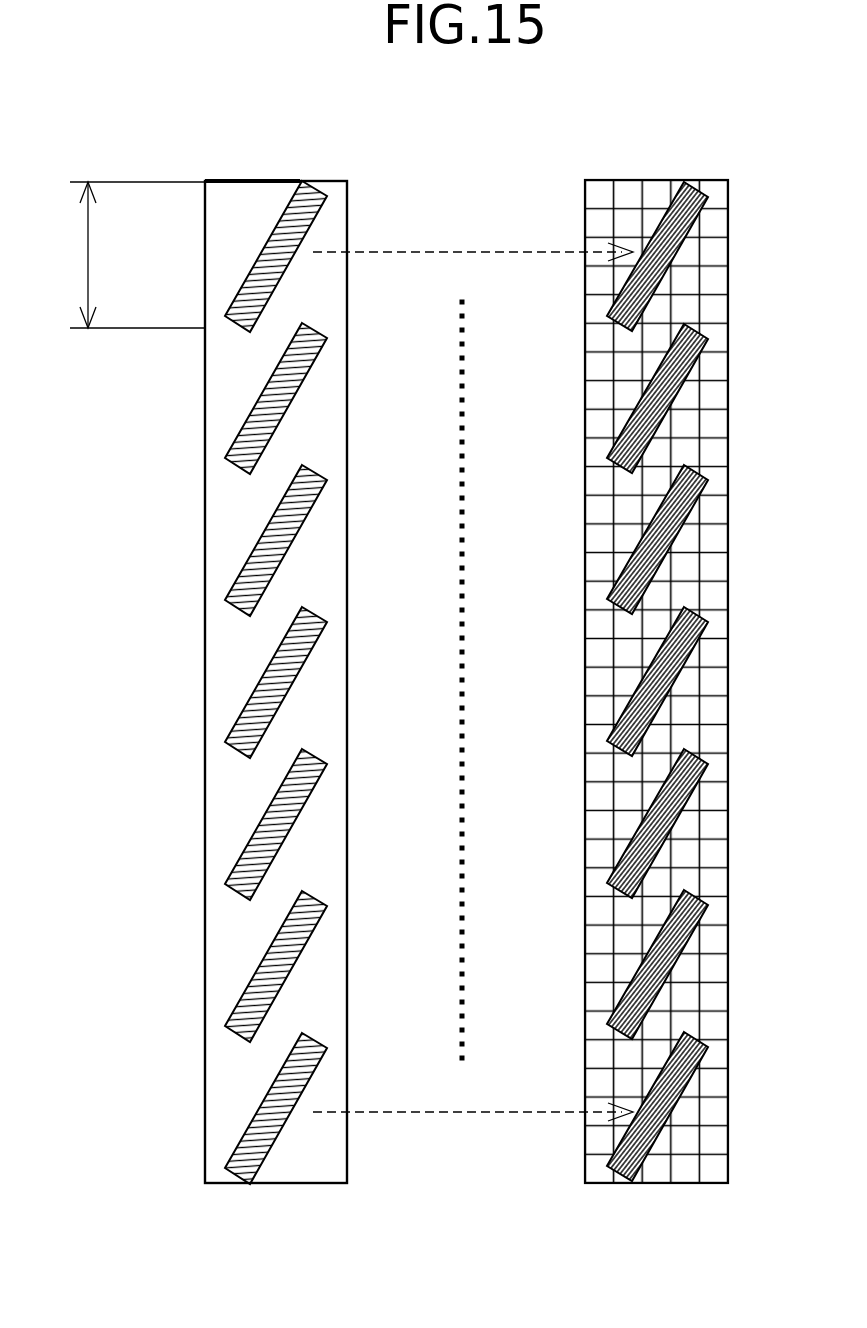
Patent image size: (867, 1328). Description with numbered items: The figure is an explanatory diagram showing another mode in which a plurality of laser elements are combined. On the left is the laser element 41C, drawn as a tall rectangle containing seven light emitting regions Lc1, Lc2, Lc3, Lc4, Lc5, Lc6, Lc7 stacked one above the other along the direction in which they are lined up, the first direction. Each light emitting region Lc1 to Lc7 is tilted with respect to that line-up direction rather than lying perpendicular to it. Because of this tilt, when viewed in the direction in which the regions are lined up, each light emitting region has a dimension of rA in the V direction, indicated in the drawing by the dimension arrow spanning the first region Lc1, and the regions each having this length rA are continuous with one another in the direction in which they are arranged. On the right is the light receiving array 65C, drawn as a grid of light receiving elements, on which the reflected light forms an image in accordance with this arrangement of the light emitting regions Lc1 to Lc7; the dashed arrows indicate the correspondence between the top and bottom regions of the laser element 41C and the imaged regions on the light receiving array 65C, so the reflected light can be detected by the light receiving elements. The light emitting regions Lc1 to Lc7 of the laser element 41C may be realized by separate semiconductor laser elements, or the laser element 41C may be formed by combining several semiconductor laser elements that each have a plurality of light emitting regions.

The laser element 41C is at (287, 133).
The light receiving array 65C is at (712, 180).
The light emitting region Lc1 is at (250, 267).
The light emitting region Lc2 is at (250, 413).
The light emitting region Lc3 is at (250, 556).
The light emitting region Lc4 is at (250, 699).
The light emitting region Lc5 is at (250, 842).
The light emitting region Lc6 is at (250, 986).
The light emitting region Lc7 is at (250, 1128).
The dimension in the V direction rA is at (131, 255).